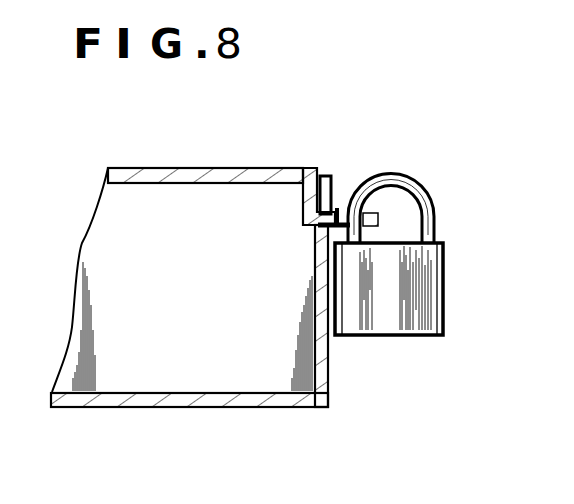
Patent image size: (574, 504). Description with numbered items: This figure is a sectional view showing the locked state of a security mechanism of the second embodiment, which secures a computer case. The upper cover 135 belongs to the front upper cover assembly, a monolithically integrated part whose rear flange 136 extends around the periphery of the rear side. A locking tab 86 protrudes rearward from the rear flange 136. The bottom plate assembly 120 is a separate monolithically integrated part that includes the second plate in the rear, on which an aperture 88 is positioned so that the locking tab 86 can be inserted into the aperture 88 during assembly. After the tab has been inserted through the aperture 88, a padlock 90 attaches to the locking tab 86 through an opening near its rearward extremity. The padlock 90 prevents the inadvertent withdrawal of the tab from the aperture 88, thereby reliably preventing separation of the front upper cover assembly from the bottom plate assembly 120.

The upper cover 135 is at (153, 166).
The rear flange 136 is at (307, 180).
The aperture 88 is at (337, 207).
The locking tab 86 is at (385, 210).
The padlock 90 is at (388, 313).
The bottom plate assembly 120 is at (242, 396).